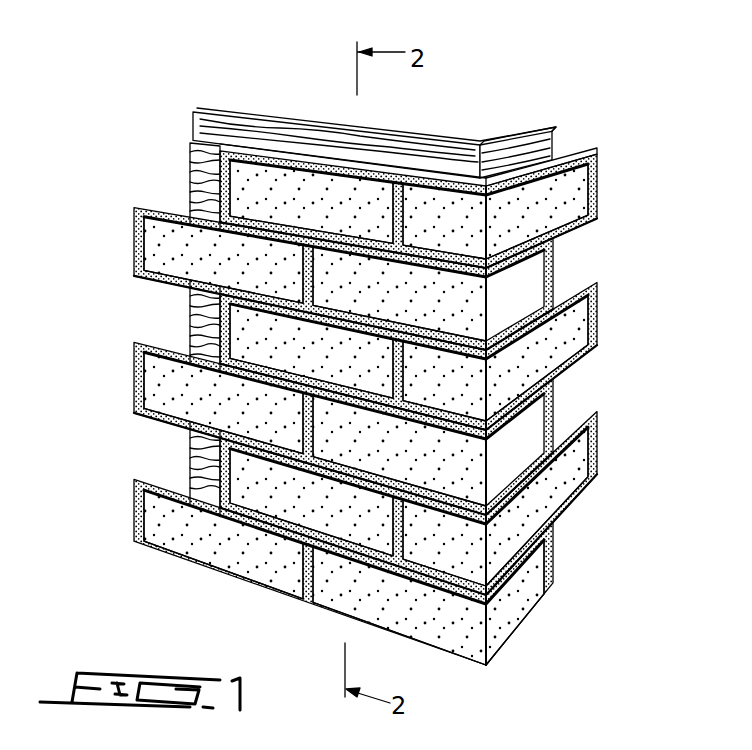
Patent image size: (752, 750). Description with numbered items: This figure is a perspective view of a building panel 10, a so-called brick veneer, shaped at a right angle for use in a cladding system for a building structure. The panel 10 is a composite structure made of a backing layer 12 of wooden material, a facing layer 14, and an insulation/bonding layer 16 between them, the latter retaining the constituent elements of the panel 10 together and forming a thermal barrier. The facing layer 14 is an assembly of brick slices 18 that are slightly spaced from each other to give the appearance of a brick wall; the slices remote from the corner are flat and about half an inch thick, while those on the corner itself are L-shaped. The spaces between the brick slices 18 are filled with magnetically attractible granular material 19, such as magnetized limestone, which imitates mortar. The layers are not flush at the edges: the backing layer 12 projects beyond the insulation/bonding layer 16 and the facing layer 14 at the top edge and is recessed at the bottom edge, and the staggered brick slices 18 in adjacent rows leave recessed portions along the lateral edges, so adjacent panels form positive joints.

The building panel 10 is at (510, 90).
The backing layer 12 is at (216, 147).
The facing layer 14 is at (577, 330).
The insulation/bonding layer 16 is at (583, 151).
The brick slices 18 is at (358, 593).
The magnetically attractible granular material 19 is at (466, 348).